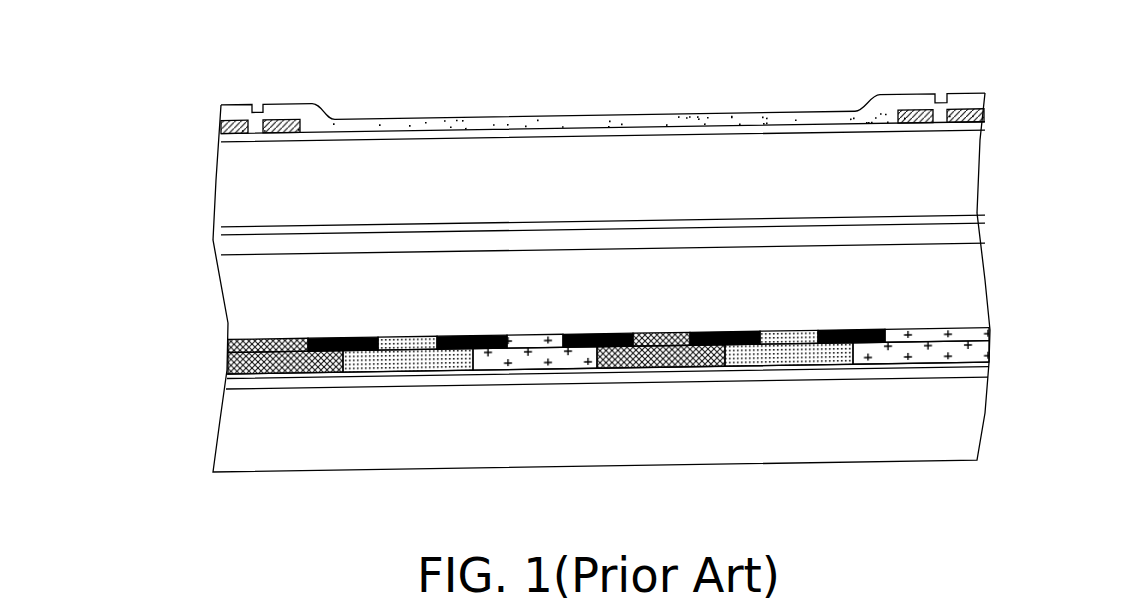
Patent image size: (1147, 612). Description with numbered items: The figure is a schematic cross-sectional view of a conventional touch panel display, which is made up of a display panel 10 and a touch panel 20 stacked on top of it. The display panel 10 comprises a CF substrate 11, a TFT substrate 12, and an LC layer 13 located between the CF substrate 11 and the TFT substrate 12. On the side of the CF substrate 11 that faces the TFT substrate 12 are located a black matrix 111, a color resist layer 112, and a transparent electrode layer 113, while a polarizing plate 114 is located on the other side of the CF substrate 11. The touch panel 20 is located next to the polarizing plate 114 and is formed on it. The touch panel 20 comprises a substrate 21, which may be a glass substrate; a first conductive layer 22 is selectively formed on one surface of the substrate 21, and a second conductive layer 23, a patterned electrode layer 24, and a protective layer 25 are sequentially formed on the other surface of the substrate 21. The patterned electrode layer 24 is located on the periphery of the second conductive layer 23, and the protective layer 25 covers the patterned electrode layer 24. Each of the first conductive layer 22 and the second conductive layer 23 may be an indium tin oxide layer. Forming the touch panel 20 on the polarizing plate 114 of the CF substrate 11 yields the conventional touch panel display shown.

The display panel 10 is at (1080, 218).
The CF substrate 11 is at (972, 288).
The black matrix 111 is at (878, 330).
The color resist layer 112 is at (988, 342).
The transparent electrode layer 113 is at (983, 367).
The polarizing plate 114 is at (967, 233).
The TFT substrate 12 is at (975, 424).
The LC layer 13 is at (983, 374).
The touch panel 20 is at (1078, 60).
The substrate 21 is at (965, 180).
The first conductive layer 22 is at (975, 217).
The second conductive layer 23 is at (977, 125).
The patterned electrode layer 24 is at (977, 113).
The protective layer 25 is at (965, 100).